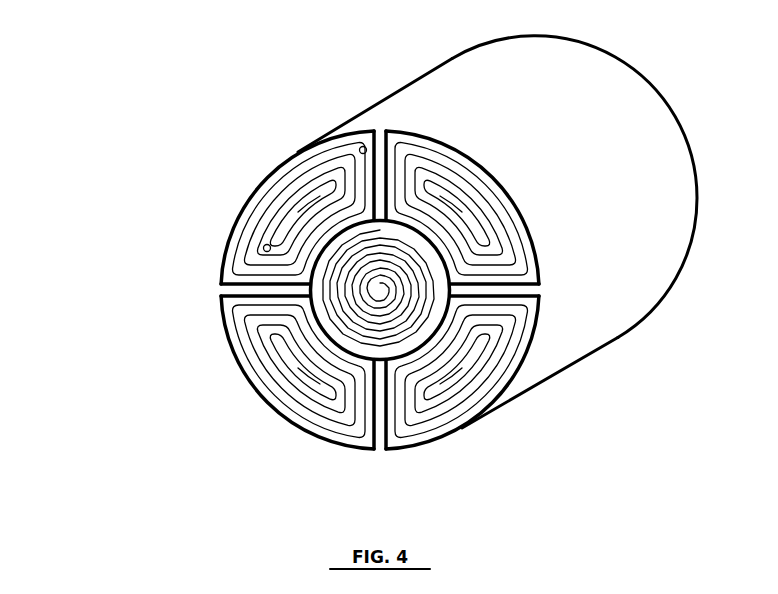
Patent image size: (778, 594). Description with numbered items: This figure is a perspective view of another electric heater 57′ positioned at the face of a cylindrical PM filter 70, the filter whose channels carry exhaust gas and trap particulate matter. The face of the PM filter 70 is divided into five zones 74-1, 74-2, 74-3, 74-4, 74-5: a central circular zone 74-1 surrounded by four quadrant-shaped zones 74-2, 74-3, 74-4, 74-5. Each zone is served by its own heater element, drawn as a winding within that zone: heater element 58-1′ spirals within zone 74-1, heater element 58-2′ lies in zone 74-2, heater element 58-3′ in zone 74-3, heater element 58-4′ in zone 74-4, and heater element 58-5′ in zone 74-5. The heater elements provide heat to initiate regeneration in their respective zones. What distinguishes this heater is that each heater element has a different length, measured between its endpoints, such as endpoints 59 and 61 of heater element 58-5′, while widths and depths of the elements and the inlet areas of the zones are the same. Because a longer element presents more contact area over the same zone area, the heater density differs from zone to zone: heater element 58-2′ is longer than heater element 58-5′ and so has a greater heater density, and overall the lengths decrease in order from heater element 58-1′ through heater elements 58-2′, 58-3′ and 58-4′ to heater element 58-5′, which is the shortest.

The PM filter 70 is at (410, 85).
The endpoint 59 is at (361, 147).
The endpoint 61 is at (264, 250).
The electric heater 57′ is at (370, 309).
The heater element 58-1′ is at (396, 320).
The heater element 58-2′ is at (505, 237).
The heater element 58-3′ is at (505, 332).
The heater element 58-4′ is at (257, 337).
The heater element 58-5′ is at (266, 216).
The zone 74-1 is at (380, 290).
The zone 74-2 is at (462, 207).
The zone 74-3 is at (462, 372).
The zone 74-4 is at (345, 382).
The zone 74-5 is at (297, 207).